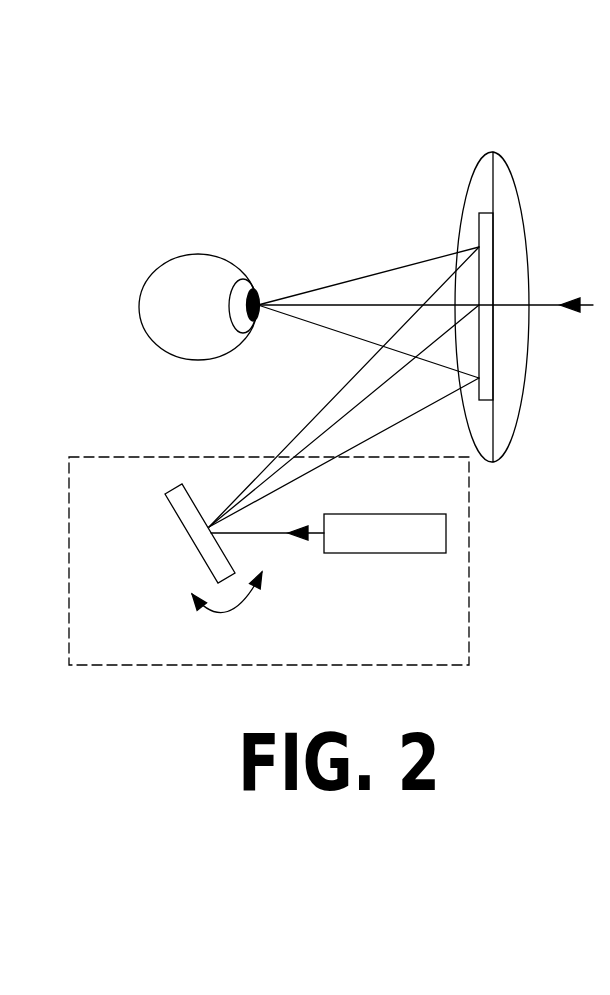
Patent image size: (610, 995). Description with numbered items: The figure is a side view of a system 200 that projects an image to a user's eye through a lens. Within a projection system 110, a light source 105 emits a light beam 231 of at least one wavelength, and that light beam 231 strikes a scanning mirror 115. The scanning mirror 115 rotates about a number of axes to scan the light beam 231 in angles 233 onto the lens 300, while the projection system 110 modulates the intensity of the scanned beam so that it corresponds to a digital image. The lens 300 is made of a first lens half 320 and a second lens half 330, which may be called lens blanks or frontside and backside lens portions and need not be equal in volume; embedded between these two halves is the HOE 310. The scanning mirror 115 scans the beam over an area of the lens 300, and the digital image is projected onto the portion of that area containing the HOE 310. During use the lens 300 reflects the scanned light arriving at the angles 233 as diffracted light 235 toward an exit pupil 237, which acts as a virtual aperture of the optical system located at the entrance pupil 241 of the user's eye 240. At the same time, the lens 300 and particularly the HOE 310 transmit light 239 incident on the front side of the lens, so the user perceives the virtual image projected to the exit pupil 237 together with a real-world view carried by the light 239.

The system 200 is at (90, 58).
The lens 300 is at (467, 130).
The second lens half 330 is at (469, 185).
The first lens half 320 is at (517, 205).
The HOE 310 is at (479, 230).
The eye 240 is at (177, 257).
The entrance pupil 241 is at (253, 288).
The exit pupil 237 is at (257, 322).
The diffracted light 235 is at (298, 318).
The light 239 is at (540, 307).
The angles 233 is at (246, 507).
The light beam 231 is at (272, 535).
The scanning mirror 115 is at (192, 538).
The light source 105 is at (385, 533).
The projection system 110 is at (100, 647).